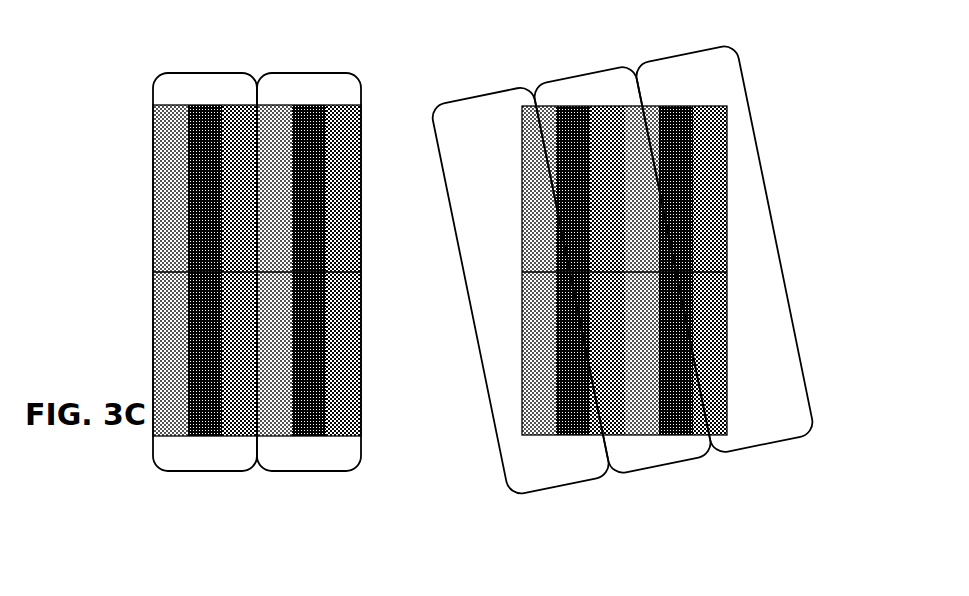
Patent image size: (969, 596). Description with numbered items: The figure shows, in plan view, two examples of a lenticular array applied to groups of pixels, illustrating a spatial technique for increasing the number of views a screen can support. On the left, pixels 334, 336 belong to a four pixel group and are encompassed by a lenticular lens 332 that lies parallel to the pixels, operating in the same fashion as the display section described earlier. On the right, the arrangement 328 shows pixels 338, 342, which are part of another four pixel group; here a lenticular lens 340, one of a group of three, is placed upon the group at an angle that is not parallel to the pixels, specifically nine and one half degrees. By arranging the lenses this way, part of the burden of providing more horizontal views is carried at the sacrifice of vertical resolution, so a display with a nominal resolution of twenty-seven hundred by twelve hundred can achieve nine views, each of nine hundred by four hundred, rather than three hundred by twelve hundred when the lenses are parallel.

The fanned display assembly 328 is at (578, 249).
The lenticular lens 332 is at (197, 93).
The pixel 334 is at (177, 148).
The pixel 336 is at (177, 357).
The pixel 338 is at (708, 135).
The lenticular lens 340 is at (745, 237).
The pixel 342 is at (708, 325).